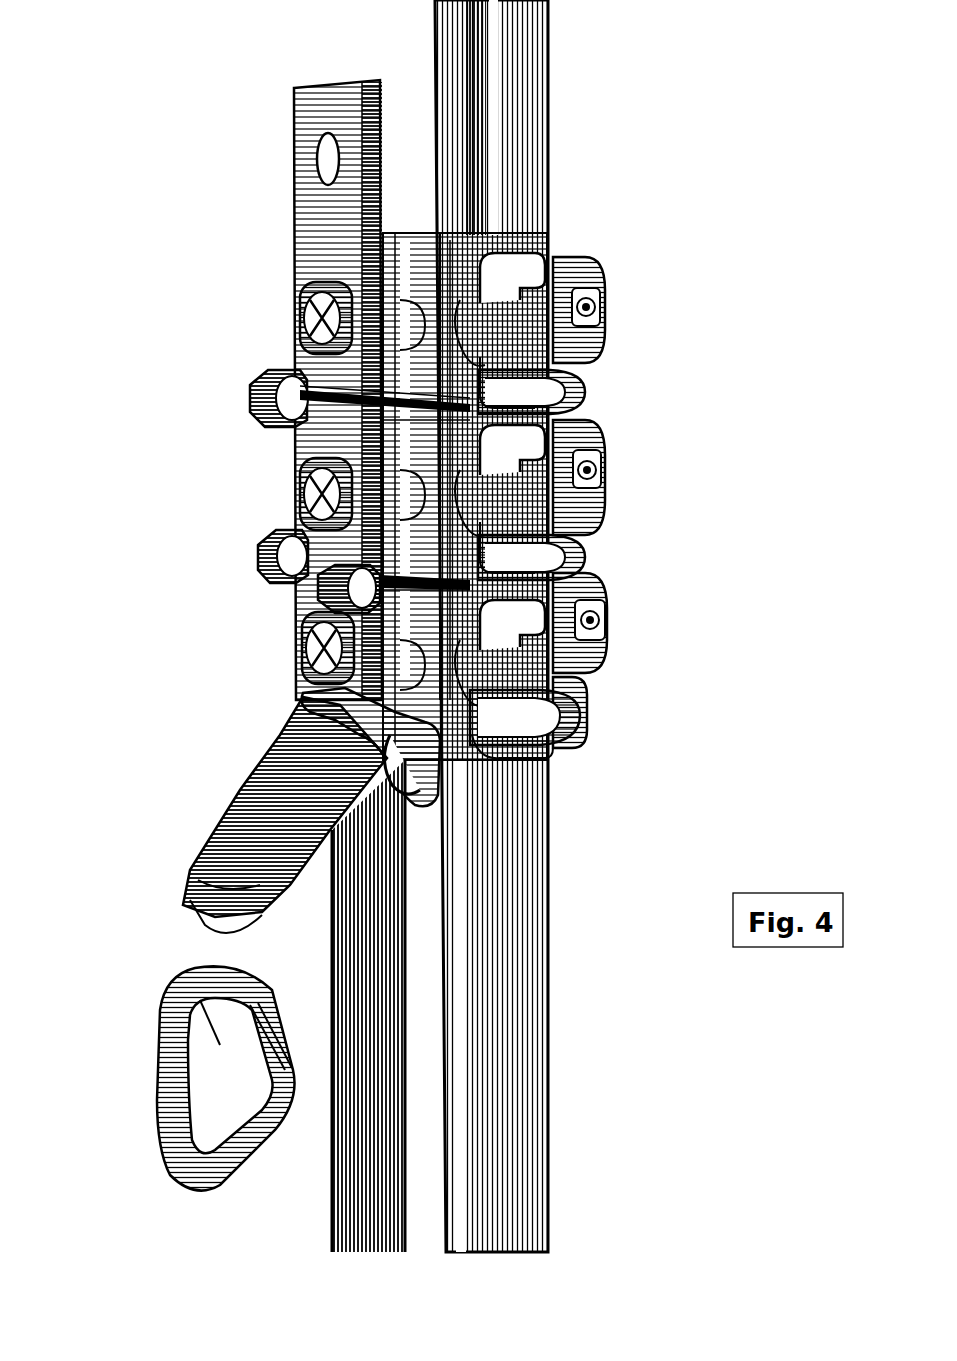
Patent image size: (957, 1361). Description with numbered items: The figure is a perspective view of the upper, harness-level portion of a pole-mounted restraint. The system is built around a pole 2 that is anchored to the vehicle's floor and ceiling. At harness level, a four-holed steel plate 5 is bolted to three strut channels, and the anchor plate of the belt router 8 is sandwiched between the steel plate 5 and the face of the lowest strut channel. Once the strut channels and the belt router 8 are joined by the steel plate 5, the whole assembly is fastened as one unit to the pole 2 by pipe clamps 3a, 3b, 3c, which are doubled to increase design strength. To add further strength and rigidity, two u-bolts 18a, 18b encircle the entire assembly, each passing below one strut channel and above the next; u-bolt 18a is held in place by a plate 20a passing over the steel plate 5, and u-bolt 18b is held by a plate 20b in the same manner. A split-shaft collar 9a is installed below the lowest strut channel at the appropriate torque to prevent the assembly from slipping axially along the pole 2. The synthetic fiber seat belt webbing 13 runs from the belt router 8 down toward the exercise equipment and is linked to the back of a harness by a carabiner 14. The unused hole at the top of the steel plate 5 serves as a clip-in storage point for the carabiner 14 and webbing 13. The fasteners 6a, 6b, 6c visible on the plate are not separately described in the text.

The pole 2 is at (550, 57).
The four-holed steel plate 5 is at (296, 128).
The pipe clamp 3a is at (553, 253).
The pipe clamp 3b is at (590, 422).
The pipe clamp 3c is at (590, 590).
The u-bolt 18a is at (578, 388).
The u-bolt 18b is at (572, 553).
The split-shaft collar 9a is at (590, 728).
The first bolt 6a is at (290, 313).
The second bolt 6b is at (298, 494).
The third bolt 6c is at (298, 645).
The plate 20a is at (293, 373).
The plate 20b is at (290, 530).
The belt router 8 is at (300, 706).
The webbing 13 is at (330, 1216).
The carabiner 14 is at (170, 990).